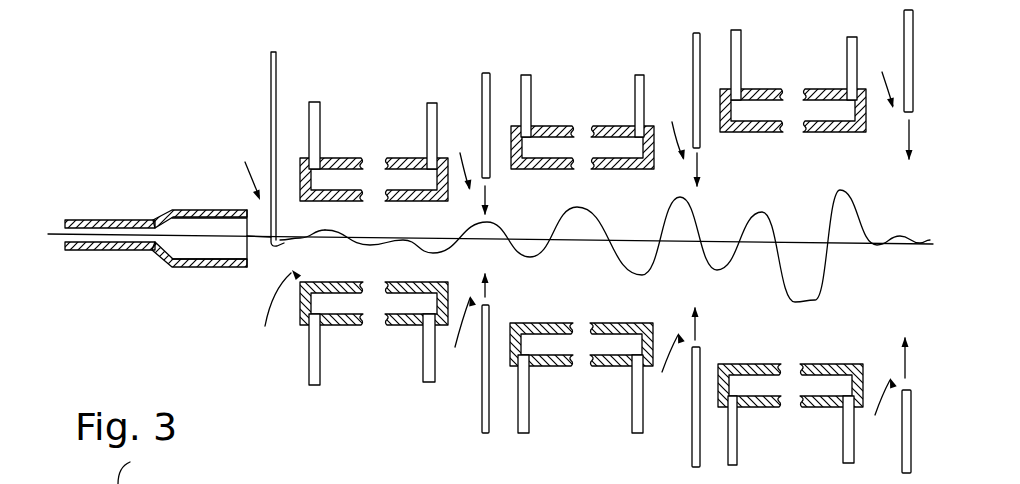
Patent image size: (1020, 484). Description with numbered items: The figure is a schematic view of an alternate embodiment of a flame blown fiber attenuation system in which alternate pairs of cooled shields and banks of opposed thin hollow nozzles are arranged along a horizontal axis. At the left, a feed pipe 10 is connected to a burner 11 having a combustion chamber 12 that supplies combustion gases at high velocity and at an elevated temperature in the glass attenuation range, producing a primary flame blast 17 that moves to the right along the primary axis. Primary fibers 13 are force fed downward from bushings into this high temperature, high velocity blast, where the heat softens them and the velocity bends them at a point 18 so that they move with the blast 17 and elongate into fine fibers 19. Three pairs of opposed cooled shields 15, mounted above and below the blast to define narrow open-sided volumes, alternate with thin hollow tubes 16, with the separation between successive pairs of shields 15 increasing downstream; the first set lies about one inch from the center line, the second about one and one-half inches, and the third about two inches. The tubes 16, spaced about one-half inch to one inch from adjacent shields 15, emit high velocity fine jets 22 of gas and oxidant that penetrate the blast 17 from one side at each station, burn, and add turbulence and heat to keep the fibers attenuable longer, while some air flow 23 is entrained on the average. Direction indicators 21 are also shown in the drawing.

The feed pipe 10 is at (88, 248).
The burner 11 is at (207, 267).
The combustion chamber 12 is at (193, 228).
The primary fibers 13 is at (285, 70).
The cooled shields 15 is at (398, 203).
The hollow tubes 16 is at (480, 96).
The primary flame blast 17 is at (263, 240).
The bending point 18 is at (279, 237).
The fine fibers 19 is at (370, 246).
The direction arrows 21 is at (257, 268).
The fine jets 22 is at (489, 194).
The air flow 23 is at (673, 248).